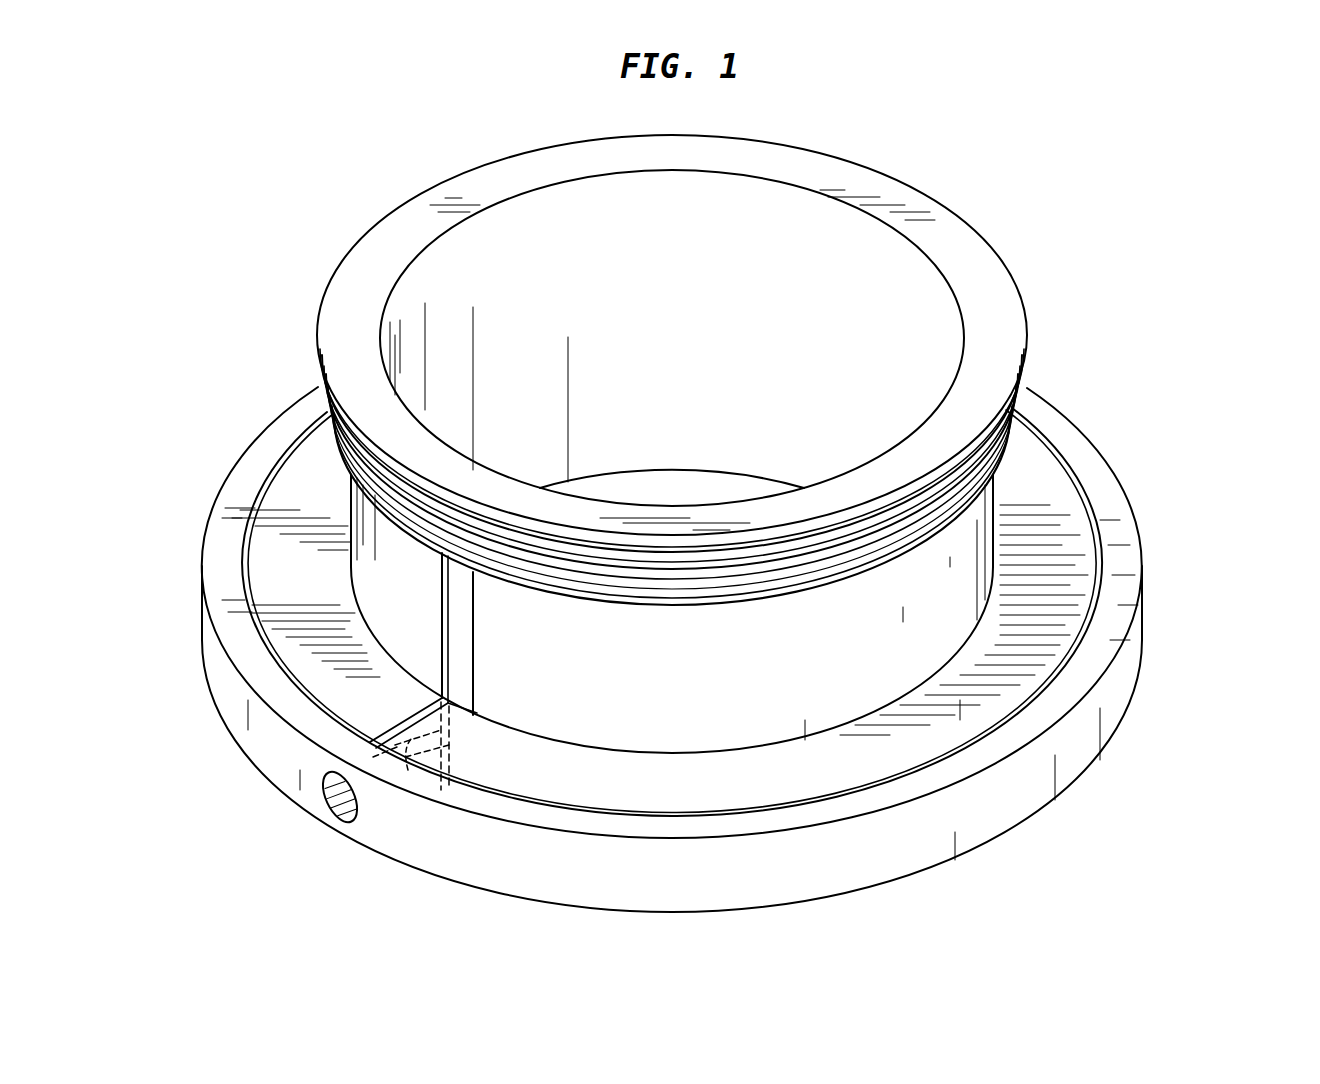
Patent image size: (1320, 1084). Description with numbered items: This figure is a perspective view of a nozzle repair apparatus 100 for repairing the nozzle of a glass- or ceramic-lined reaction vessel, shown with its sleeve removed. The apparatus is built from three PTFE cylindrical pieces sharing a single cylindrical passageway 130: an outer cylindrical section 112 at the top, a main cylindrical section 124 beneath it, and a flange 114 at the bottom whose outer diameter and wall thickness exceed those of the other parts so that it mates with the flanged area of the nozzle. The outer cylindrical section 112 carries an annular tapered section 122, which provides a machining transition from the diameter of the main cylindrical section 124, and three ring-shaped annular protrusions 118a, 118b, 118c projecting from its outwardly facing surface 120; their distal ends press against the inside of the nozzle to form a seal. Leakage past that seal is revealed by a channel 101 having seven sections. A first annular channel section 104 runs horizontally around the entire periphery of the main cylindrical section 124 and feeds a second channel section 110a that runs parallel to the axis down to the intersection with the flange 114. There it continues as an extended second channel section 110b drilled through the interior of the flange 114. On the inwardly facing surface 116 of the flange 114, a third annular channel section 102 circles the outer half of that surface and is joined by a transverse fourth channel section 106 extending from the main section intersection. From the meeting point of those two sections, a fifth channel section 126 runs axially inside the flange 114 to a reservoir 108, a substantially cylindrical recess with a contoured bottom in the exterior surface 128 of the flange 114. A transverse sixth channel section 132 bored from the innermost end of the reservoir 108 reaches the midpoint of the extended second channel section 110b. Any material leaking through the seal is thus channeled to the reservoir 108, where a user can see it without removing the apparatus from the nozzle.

The nozzle repair apparatus 100 is at (1048, 154).
The channel 101 is at (476, 582).
The third annular channel section 102 is at (248, 566).
The first annular channel section 104 is at (578, 594).
The fourth channel section 106 is at (407, 720).
The reservoir 108 is at (337, 800).
The second channel section 110a is at (443, 612).
The extended second channel section 110b is at (449, 760).
The outer cylindrical section 112 is at (1045, 335).
The flange 114 is at (1170, 670).
The inwardly facing surface 116 is at (1118, 494).
The annular protrusion 118a is at (318, 338).
The annular protrusion 118b is at (320, 393).
The annular protrusion 118c is at (330, 440).
The outwardly facing surface 120 is at (720, 584).
The annular tapered section 122 is at (668, 592).
The main cylindrical section 124 is at (1042, 532).
The fifth channel section 126 is at (367, 747).
The exterior surface 128 is at (232, 690).
The cylindrical passageway 130 is at (768, 218).
The sixth channel section 132 is at (420, 755).